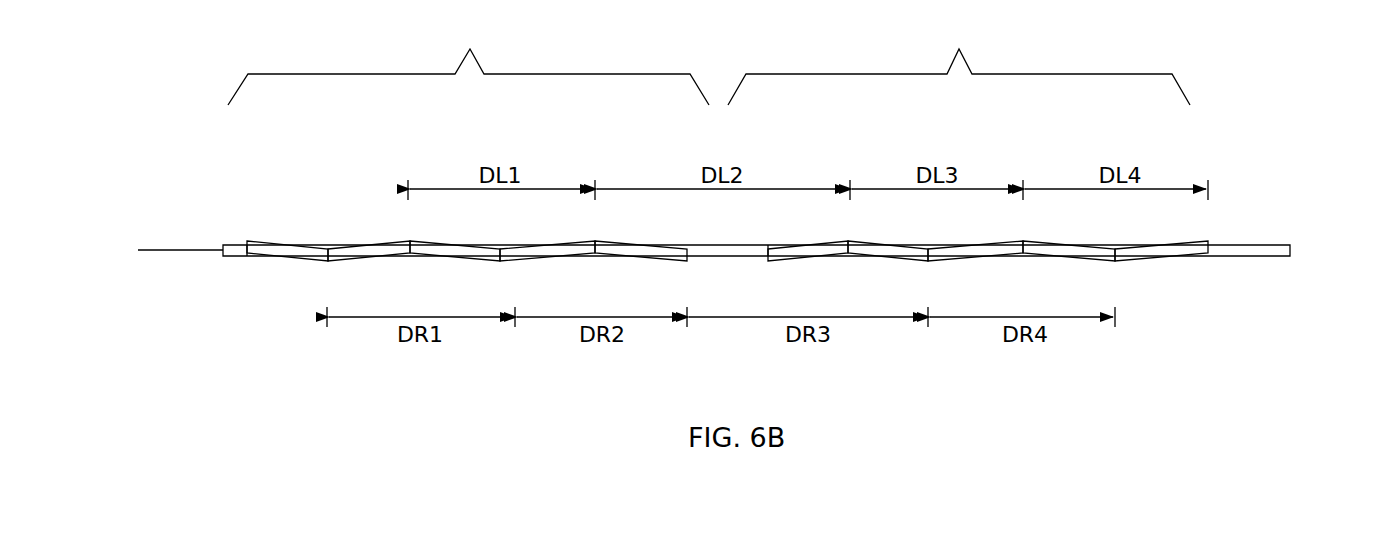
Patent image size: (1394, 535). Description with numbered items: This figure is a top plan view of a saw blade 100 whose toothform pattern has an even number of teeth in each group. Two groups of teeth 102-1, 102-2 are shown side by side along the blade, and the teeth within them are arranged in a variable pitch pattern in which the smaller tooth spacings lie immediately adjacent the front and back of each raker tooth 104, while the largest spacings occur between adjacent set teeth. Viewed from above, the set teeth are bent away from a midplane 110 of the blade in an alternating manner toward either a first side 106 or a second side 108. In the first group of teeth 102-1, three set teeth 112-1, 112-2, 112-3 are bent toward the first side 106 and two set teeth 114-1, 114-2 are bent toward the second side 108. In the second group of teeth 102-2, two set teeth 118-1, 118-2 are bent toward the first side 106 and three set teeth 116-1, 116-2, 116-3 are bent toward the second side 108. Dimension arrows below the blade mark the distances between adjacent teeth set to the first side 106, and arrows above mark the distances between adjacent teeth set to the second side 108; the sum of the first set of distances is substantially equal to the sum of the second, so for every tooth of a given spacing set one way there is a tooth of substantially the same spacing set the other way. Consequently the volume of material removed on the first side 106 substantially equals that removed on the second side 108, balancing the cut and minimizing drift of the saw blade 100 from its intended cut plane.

The saw blade 100 is at (1257, 130).
The first group of teeth 102-1 is at (468, 62).
The second group of teeth 102-2 is at (959, 62).
The raker tooth 104 is at (244, 244).
The first side 106 is at (1196, 318).
The second side 108 is at (1028, 155).
The midplane 110 is at (161, 249).
The set tooth 112-1 is at (313, 262).
The set tooth 112-2 is at (492, 262).
The set tooth 112-3 is at (677, 262).
The set tooth 114-1 is at (397, 240).
The set tooth 114-2 is at (580, 240).
The set tooth 116-1 is at (842, 240).
The set tooth 116-2 is at (1013, 241).
The set tooth 116-3 is at (1204, 241).
The set tooth 118-1 is at (918, 262).
The set tooth 118-2 is at (1108, 262).